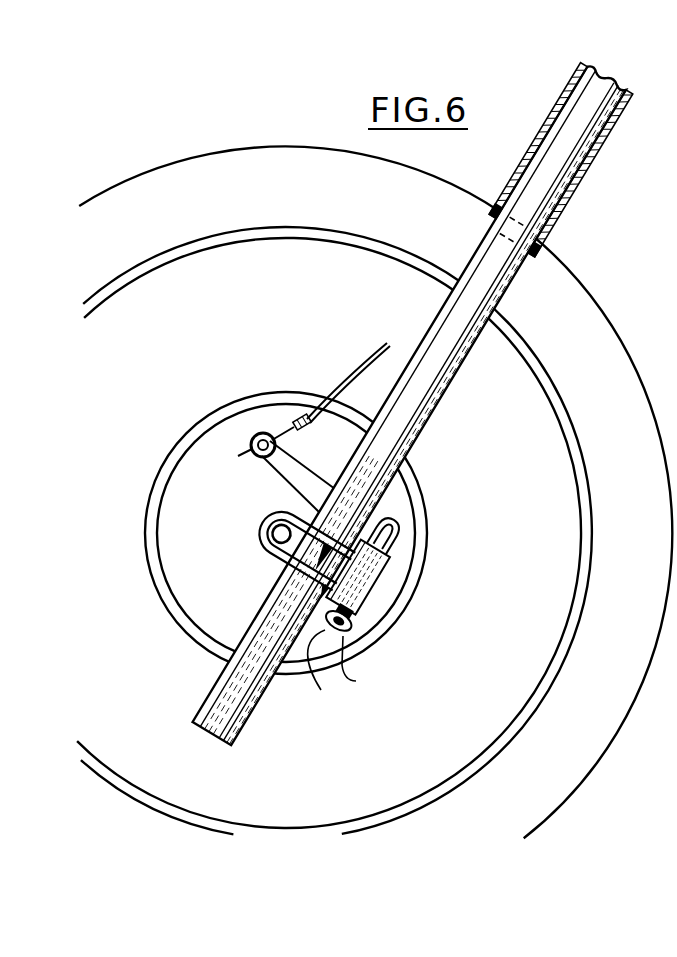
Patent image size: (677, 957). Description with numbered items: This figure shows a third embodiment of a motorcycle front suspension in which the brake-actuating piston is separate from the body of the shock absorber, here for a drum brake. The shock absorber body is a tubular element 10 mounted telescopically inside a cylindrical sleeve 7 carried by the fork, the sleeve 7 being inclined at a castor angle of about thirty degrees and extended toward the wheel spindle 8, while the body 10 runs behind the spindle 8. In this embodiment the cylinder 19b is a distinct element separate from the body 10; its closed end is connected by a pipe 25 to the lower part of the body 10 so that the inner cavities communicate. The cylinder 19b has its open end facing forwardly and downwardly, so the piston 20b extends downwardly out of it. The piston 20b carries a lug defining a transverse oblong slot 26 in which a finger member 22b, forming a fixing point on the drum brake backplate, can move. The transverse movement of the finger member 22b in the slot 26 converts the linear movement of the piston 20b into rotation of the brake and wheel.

The cylindrical sleeve 7 is at (597, 128).
The tubular element 10 is at (455, 347).
The spindle 8 is at (279, 514).
The pipe 25 is at (396, 518).
The cylinder 19b is at (378, 573).
The piston 20b is at (356, 626).
The finger member 22b is at (356, 681).
The transverse oblong slot 26 is at (323, 675).